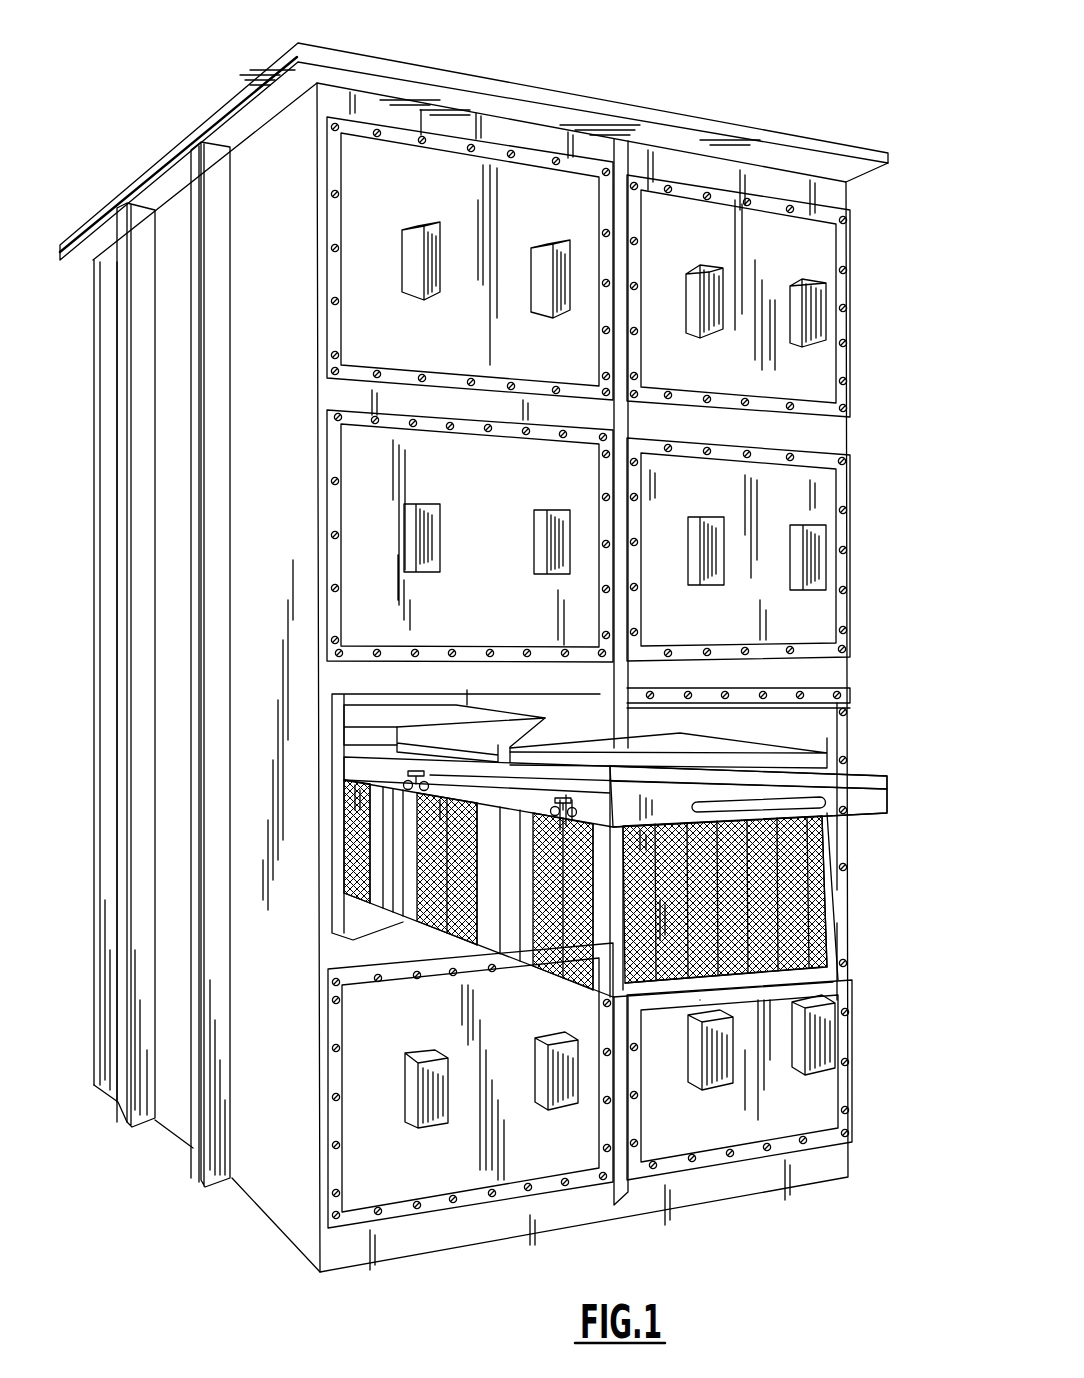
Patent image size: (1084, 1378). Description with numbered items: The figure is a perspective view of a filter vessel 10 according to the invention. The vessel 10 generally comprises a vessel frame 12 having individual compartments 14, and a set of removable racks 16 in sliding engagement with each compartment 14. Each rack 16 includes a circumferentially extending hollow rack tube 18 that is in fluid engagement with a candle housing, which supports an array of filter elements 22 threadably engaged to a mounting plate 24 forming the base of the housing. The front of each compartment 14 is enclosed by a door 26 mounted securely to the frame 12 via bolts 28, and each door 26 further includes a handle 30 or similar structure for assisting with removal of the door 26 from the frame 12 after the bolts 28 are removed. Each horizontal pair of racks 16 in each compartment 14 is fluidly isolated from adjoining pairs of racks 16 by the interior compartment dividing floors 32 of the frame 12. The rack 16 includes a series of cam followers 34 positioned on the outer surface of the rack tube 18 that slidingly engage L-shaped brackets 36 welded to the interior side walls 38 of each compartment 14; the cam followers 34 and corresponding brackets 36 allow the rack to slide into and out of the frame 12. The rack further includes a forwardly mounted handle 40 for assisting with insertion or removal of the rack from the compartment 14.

The filter vessel 10 is at (150, 82).
The vessel frame 12 is at (262, 387).
The compartment 14 is at (852, 697).
The removable rack 16 is at (885, 816).
The rack tube 18 is at (858, 800).
The filter elements 22 is at (812, 906).
The mounting plate 24 is at (745, 748).
The door 26 is at (362, 608).
The bolts 28 is at (323, 487).
The handle 30 is at (407, 547).
The compartment dividing floors 32 is at (370, 930).
The cam followers 34 is at (410, 783).
The L-shaped brackets 36 is at (342, 768).
The interior side walls 38 is at (348, 845).
The handle 40 is at (815, 808).